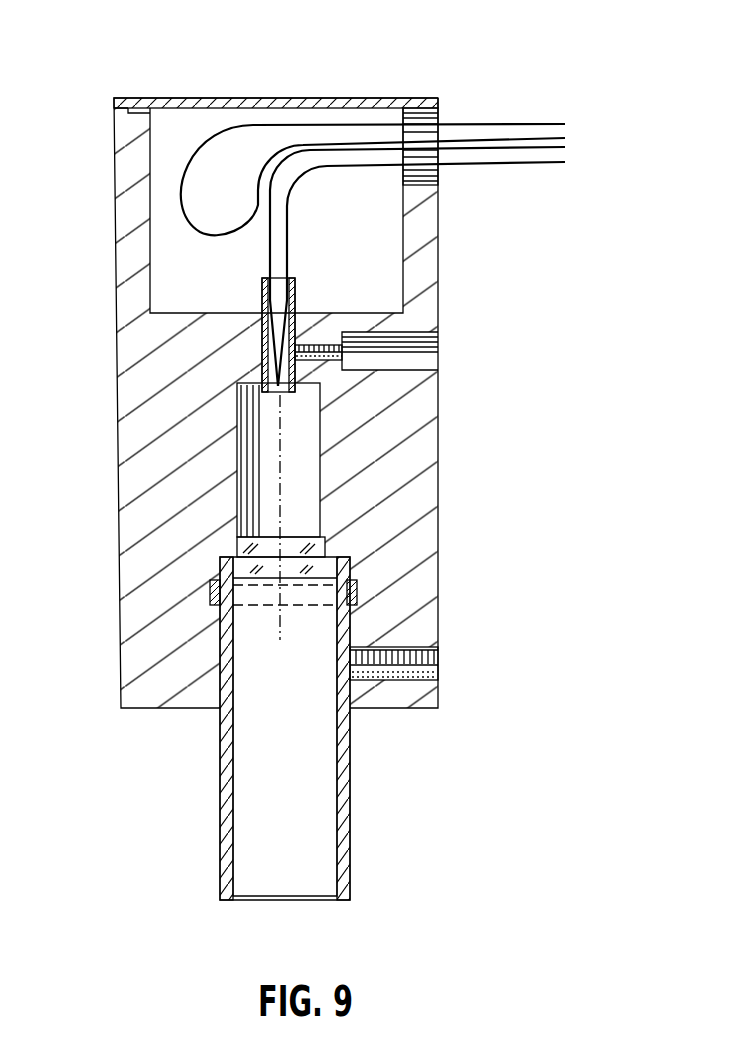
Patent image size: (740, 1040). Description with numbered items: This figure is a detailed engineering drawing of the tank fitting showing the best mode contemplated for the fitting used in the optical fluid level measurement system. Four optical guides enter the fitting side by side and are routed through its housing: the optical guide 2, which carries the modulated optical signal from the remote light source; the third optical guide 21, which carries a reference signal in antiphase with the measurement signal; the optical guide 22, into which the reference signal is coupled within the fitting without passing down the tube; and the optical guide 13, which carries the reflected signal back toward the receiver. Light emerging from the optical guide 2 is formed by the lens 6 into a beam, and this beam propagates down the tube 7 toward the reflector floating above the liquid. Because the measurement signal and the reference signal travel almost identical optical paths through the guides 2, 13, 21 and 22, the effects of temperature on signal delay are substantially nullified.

The third optical guide 21 is at (527, 124).
The optical guide 22 is at (545, 138).
The optical guide 2 is at (553, 150).
The optical guide 13 is at (527, 164).
The lens 6 is at (237, 545).
The tube 7 is at (350, 812).